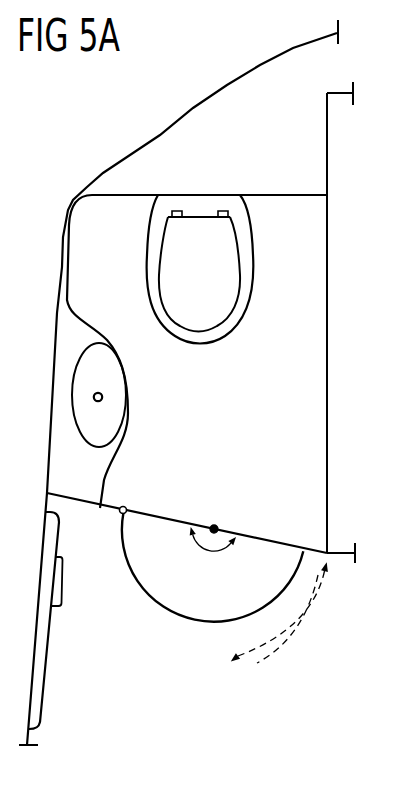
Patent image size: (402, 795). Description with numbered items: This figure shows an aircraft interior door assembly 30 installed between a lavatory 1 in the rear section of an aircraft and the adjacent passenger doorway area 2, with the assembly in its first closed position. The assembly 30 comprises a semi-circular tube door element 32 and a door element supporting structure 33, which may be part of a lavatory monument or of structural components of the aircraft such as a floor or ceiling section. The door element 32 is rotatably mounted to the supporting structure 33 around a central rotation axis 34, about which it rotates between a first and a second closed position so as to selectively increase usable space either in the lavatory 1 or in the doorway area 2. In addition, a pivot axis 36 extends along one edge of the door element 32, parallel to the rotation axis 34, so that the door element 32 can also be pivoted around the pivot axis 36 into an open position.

The lavatory 1 is at (220, 395).
The passenger doorway area 2 is at (159, 681).
The aircraft interior door assembly 30 is at (272, 491).
The semi-circular tube door element 32 is at (140, 590).
The door element supporting structure 33 is at (172, 503).
The rotation axis 34 is at (215, 526).
The pivot axis 36 is at (126, 506).